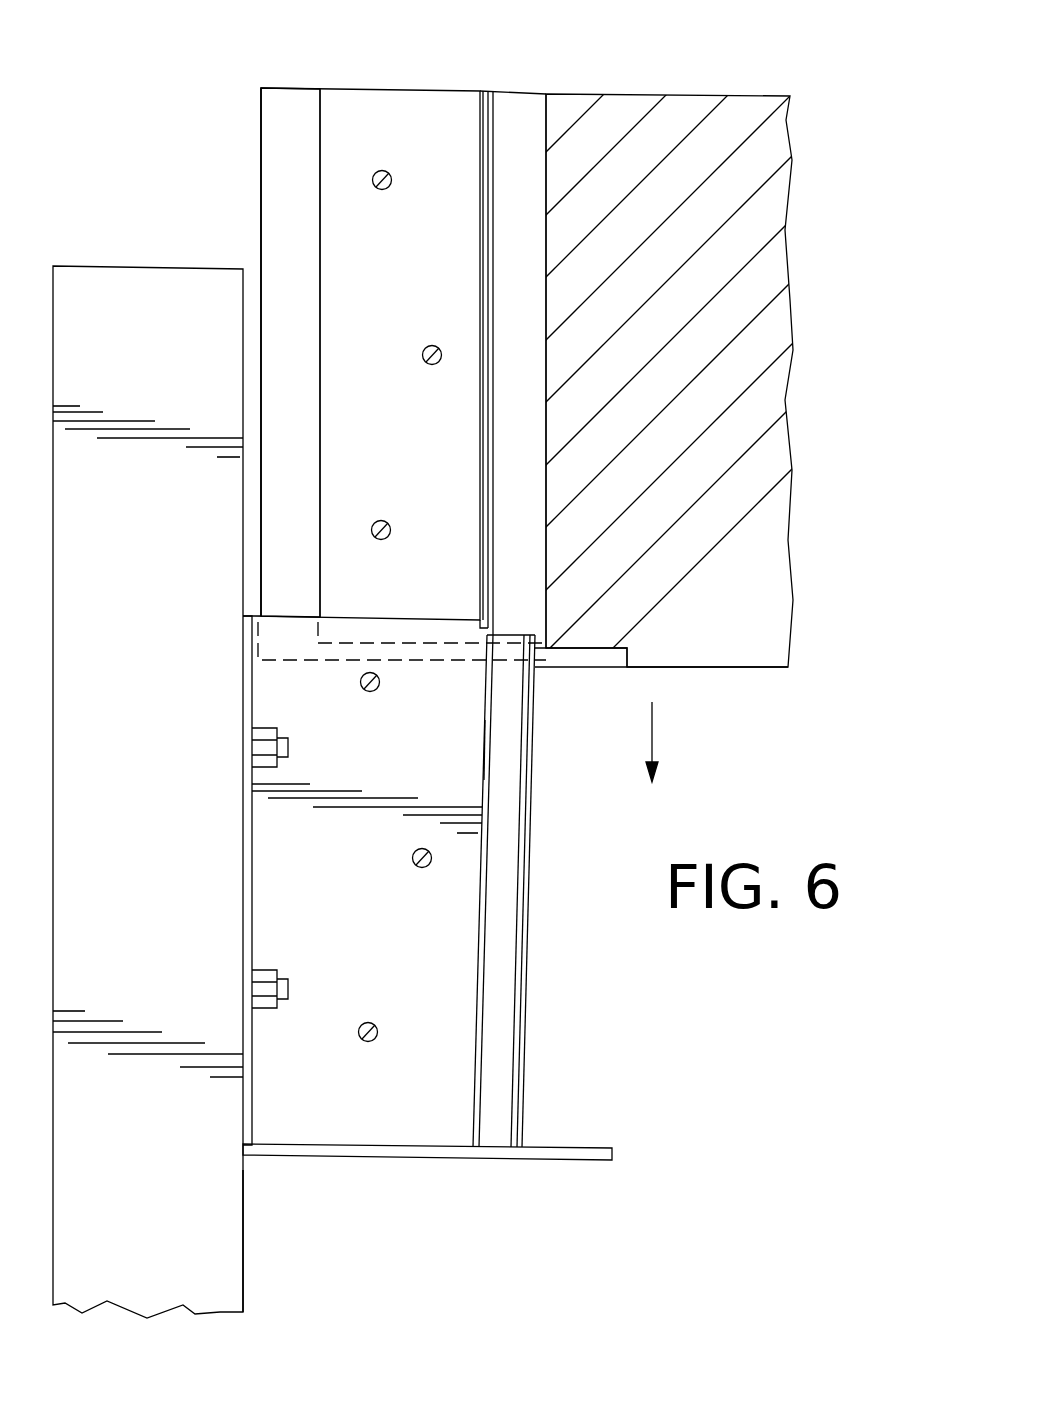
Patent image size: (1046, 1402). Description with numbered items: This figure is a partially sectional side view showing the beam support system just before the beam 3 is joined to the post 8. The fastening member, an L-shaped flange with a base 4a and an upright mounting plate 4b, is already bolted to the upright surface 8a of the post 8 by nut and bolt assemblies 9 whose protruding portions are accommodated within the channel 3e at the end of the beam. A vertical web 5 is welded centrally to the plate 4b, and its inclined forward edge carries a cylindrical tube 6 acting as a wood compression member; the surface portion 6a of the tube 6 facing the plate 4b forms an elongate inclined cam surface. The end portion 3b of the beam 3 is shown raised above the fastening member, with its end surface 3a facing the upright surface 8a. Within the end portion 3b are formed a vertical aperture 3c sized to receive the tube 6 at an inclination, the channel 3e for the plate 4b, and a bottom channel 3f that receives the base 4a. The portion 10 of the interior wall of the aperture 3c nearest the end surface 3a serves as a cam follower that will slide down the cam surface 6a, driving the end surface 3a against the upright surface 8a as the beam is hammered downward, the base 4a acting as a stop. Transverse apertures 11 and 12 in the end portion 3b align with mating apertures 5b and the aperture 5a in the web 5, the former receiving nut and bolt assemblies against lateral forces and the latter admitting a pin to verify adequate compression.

The beam 3 is at (762, 212).
The end surface 3a is at (262, 191).
The end portion 3b is at (393, 90).
The vertical aperture 3c is at (512, 140).
The channel 3e is at (297, 132).
The channel 3f is at (578, 655).
The base 4a is at (330, 1143).
The upright mounting plate 4b is at (253, 1075).
The vertical web 5 is at (443, 1087).
The aperture 5a is at (413, 858).
The mating apertures 5b is at (370, 692).
The cylindrical tube 6 is at (497, 982).
The cam surface 6a is at (485, 763).
The post 8 is at (123, 266).
The upright surface 8a is at (243, 1253).
The nut and bolt assemblies 9 is at (265, 728).
The portion of interior wall 10 is at (488, 626).
The transverse apertures 11 is at (378, 189).
The transverse aperture 12 is at (427, 361).